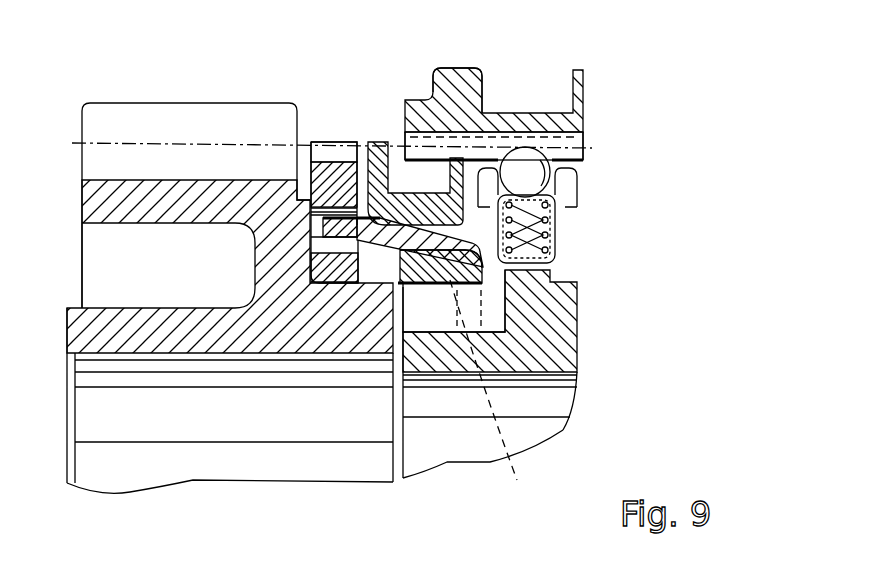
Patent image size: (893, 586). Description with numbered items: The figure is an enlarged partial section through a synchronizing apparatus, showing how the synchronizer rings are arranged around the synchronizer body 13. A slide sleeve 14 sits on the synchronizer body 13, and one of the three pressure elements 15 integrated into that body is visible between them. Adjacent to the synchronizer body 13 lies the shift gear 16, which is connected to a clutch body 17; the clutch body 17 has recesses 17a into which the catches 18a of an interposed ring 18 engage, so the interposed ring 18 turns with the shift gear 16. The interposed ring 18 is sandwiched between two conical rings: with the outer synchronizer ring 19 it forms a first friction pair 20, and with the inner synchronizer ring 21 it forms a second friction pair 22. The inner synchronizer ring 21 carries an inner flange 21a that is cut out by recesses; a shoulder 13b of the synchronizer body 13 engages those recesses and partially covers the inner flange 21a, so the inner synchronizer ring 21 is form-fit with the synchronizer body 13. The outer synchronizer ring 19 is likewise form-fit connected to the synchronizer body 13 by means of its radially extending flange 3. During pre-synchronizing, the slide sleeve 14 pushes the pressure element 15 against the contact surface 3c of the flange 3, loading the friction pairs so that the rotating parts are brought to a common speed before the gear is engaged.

The flange 3 is at (458, 150).
The contact surface 3c is at (497, 152).
The synchronizer body 13 is at (552, 332).
The shoulder 13b is at (470, 275).
The slide sleeve 14 is at (470, 100).
The pressure element 15 is at (528, 168).
The shift gear 16 is at (257, 283).
The clutch body 17 is at (333, 283).
The recesses 17a is at (322, 236).
The interposed ring 18 is at (412, 268).
The catches 18a is at (340, 216).
The outer synchronizer ring 19 is at (403, 198).
The first friction pair 20 is at (553, 226).
The inner synchronizer ring 21 is at (396, 266).
The inner flange 21a is at (497, 397).
The second friction pair 22 is at (428, 265).